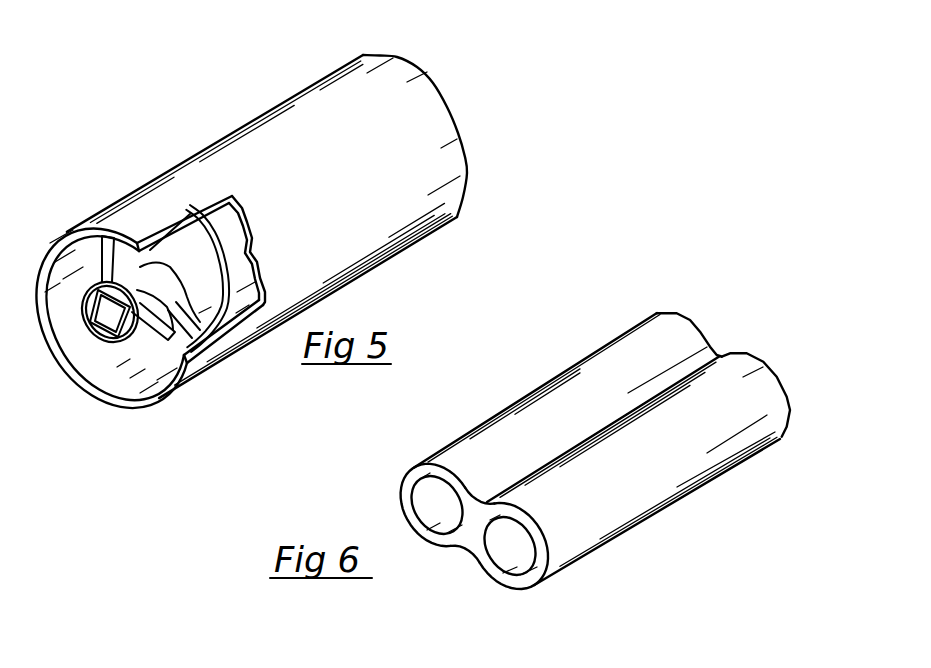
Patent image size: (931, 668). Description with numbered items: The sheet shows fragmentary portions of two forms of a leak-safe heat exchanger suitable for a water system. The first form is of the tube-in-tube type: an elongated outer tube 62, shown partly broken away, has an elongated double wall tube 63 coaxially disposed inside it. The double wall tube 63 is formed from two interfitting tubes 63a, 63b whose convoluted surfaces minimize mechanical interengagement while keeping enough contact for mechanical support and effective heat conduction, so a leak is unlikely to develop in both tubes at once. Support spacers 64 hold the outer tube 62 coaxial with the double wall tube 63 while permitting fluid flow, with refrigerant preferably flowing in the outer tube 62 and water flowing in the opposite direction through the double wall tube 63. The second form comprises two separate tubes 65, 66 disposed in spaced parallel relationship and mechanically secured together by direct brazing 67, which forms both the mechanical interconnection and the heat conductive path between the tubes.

In FIG. 5, the outer tube 62 is at (69, 230).
In FIG. 5, the double wall tube 63 is at (81, 341).
In FIG. 5, the interfitting tube 63a is at (120, 330).
In FIG. 5, the interfitting tube 63b is at (95, 309).
In FIG. 5, the support spacer 64 is at (263, 275).
In FIG. 6, the tube 65 is at (402, 488).
In FIG. 6, the tube 66 is at (538, 535).
In FIG. 6, the brazing 67 is at (463, 543).